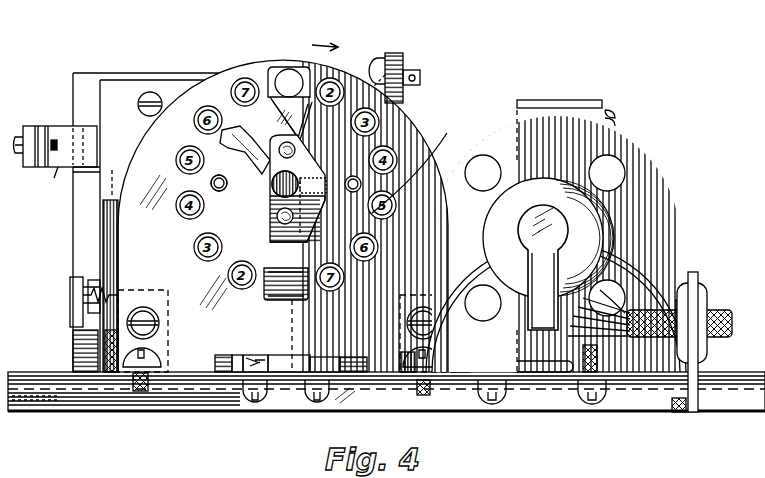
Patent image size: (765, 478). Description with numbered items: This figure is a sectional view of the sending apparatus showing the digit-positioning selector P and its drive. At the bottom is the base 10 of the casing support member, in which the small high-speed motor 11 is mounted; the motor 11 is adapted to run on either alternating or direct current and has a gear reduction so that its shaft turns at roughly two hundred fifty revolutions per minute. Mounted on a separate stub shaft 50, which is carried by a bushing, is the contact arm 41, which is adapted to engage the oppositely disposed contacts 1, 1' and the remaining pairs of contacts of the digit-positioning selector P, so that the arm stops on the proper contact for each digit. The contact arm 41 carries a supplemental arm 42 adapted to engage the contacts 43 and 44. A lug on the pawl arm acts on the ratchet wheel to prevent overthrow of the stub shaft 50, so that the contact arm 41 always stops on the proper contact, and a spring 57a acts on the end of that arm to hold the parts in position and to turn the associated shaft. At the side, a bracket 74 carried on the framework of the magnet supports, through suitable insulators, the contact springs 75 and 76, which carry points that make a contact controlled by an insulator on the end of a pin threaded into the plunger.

The contact 1 is at (290, 88).
The contact 1' is at (286, 295).
The base 10 is at (122, 411).
The motor 11 is at (657, 212).
The contact arm 41 is at (273, 115).
The supplemental arm 42 is at (222, 138).
The contact 43 is at (224, 191).
The contact 44 is at (417, 164).
The stub shaft 50 is at (272, 200).
The spring 57a is at (96, 289).
The bracket 74 is at (58, 170).
The contact spring 75 is at (54, 122).
The contact spring 76 is at (33, 128).
The digit-positioning selector P is at (403, 84).